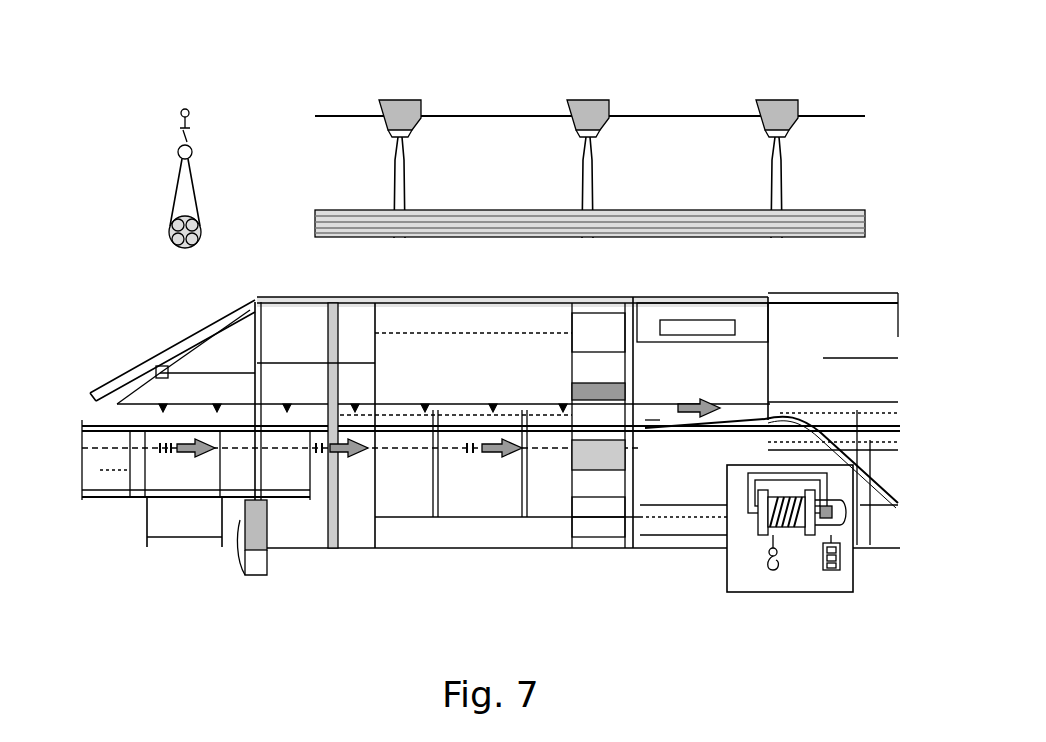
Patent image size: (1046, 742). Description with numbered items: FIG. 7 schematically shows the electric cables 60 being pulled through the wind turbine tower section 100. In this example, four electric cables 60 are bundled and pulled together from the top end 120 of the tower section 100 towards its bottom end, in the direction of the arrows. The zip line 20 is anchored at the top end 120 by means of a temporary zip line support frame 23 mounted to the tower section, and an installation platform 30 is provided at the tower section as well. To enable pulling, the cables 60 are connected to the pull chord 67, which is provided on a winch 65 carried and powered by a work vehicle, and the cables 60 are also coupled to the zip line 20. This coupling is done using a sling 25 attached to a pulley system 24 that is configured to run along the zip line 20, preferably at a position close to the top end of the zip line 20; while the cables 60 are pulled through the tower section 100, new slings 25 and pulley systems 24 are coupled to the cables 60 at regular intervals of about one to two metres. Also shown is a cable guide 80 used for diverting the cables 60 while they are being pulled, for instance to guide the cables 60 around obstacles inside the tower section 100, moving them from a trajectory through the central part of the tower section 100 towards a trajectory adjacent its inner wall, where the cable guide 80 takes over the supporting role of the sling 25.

The zip line 20 is at (688, 116).
The zip line support frame 23 is at (185, 343).
The pulley system 24 is at (410, 133).
The sling 25 is at (597, 197).
The installation platform 30 is at (110, 500).
The electric cables 60 is at (825, 215).
The winch 65 is at (760, 535).
The pull chord 67 is at (658, 427).
The cable guide 80 is at (870, 477).
The wind turbine tower section 100 is at (433, 548).
The top end 120 is at (256, 548).